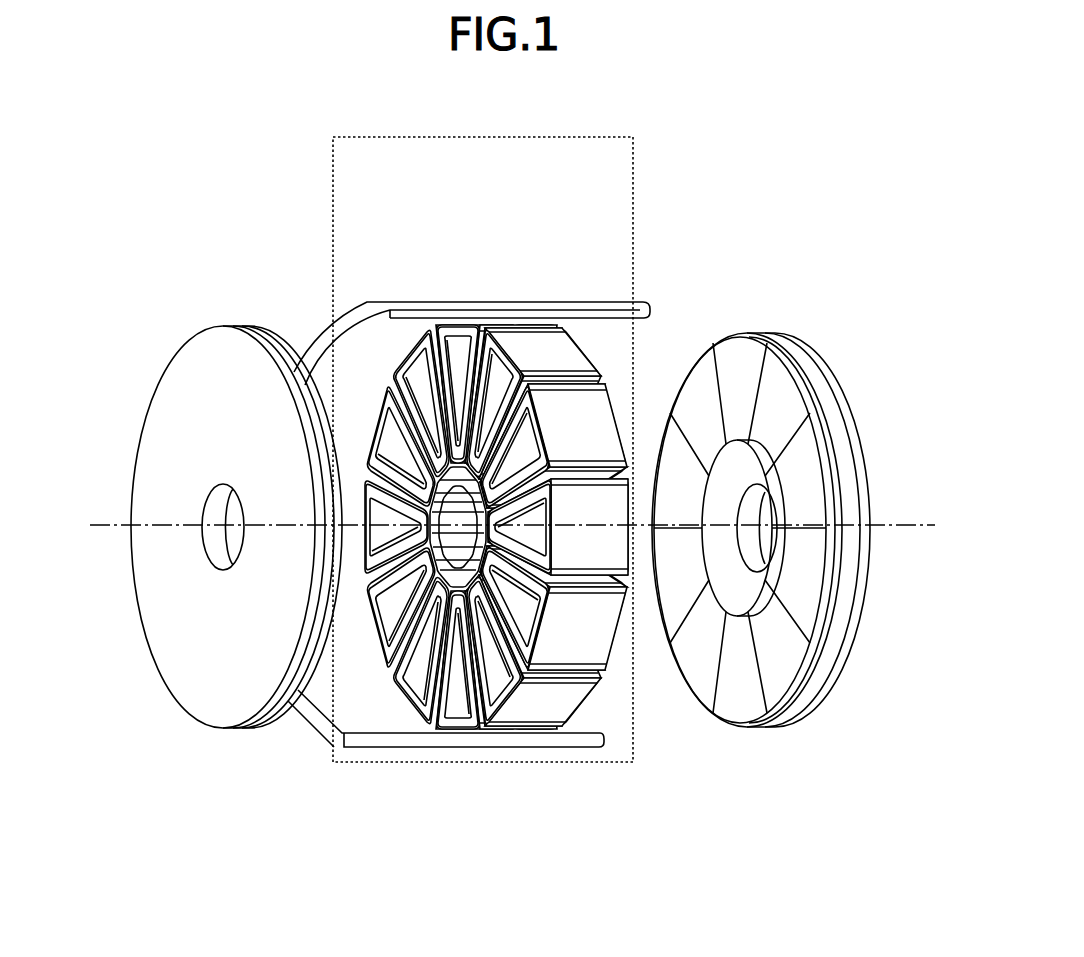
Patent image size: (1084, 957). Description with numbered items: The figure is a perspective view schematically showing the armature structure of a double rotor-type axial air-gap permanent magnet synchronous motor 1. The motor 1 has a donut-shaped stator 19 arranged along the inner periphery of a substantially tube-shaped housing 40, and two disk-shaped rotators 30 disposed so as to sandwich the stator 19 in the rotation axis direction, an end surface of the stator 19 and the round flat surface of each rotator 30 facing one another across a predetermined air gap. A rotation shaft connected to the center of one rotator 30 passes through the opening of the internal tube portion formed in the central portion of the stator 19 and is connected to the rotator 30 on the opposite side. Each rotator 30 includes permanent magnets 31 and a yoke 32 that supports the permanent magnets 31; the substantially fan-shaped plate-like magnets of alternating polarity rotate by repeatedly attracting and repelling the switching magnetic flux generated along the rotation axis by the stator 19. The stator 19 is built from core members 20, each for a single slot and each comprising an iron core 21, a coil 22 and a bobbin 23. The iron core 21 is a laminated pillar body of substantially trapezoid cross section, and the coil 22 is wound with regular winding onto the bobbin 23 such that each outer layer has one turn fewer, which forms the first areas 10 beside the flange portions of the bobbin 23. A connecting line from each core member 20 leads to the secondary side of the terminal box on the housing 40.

The axial air-gap permanent magnet synchronous motor 1 is at (181, 274).
The first areas 10 is at (440, 573).
The stator 19 is at (333, 192).
The core member 20 is at (407, 220).
The iron core 21 is at (478, 408).
The coil 22 is at (458, 437).
The bobbin 23 is at (540, 347).
The rotator 30 is at (698, 246).
The permanent magnets 31 is at (725, 342).
The yoke 32 is at (780, 335).
The housing 40 is at (325, 730).